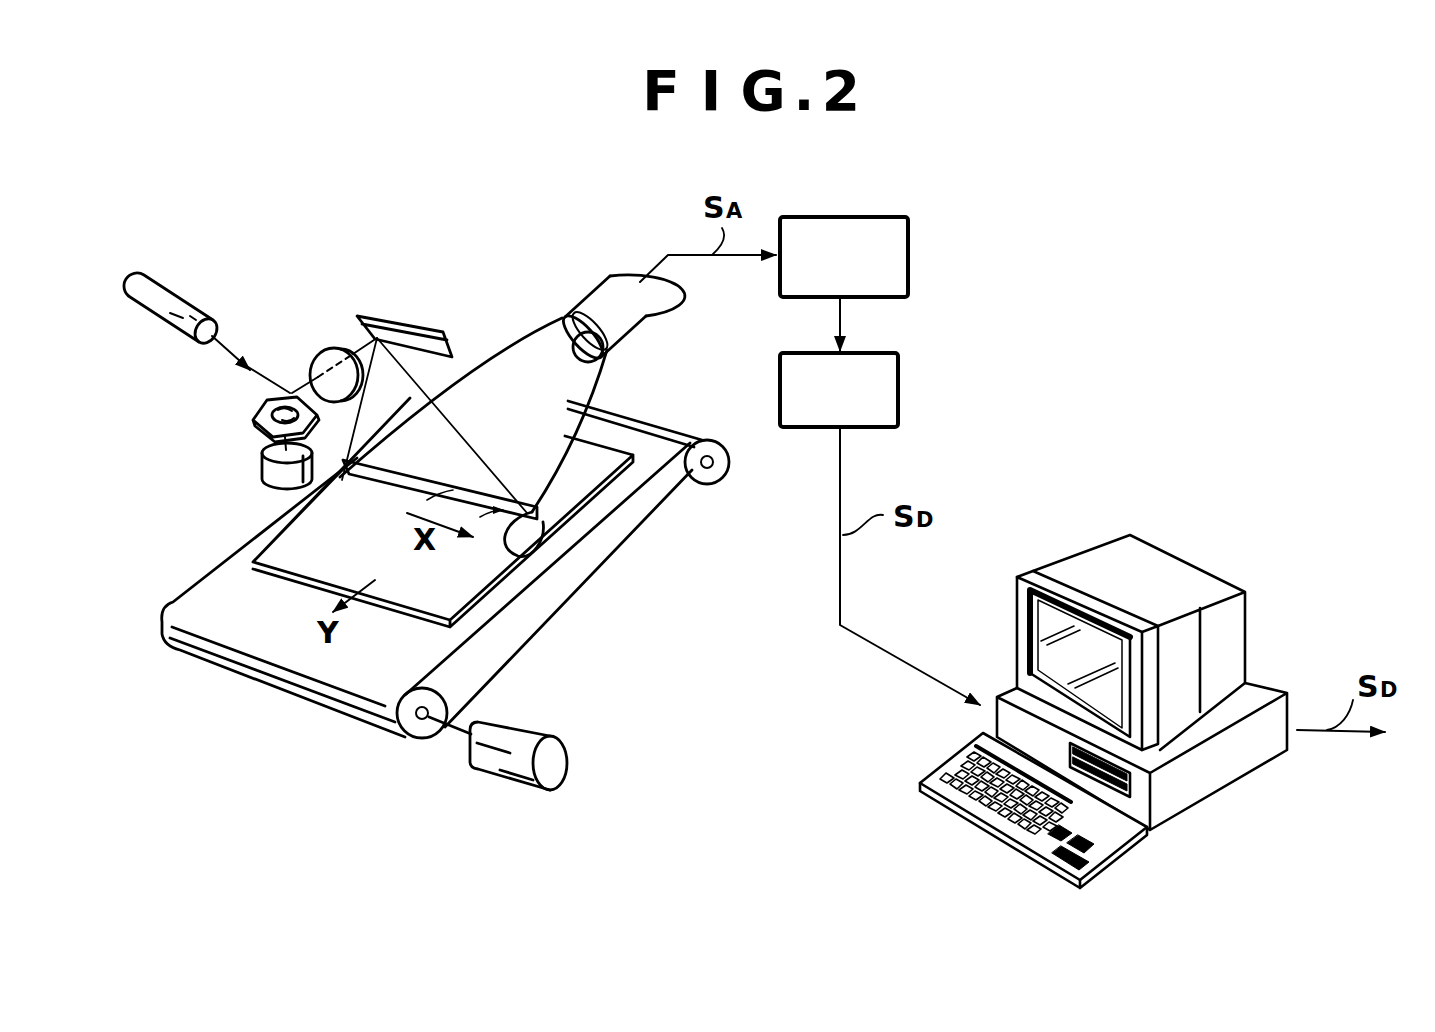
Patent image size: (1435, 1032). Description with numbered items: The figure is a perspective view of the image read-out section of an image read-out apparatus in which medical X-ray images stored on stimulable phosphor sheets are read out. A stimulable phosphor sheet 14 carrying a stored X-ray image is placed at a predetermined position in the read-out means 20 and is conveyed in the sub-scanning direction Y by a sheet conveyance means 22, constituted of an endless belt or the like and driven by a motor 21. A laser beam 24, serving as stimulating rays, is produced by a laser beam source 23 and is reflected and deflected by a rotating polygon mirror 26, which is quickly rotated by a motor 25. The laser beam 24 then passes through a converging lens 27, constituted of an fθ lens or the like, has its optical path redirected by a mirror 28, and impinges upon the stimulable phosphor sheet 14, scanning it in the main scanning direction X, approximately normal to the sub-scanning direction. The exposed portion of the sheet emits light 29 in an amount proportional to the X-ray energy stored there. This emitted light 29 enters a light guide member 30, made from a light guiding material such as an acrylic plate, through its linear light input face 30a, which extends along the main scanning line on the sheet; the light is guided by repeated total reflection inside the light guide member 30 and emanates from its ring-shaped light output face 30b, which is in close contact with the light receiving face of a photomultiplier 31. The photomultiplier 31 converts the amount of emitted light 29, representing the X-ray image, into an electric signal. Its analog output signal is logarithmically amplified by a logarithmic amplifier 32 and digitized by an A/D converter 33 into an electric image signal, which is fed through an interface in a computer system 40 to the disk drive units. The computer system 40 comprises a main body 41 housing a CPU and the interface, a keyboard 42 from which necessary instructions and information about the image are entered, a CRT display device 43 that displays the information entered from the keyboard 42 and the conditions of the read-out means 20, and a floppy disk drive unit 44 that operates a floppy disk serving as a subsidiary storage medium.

The stimulable phosphor sheet 14 is at (512, 600).
The read-out means 20 is at (400, 290).
The motor 21 is at (527, 733).
The sheet conveyance means 22 is at (447, 679).
The laser beam source 23 is at (174, 298).
The laser beam 24 is at (234, 348).
The motor 25 is at (266, 470).
The rotating polygon mirror 26 is at (258, 412).
The converging lens 27 is at (320, 352).
The mirror 28 is at (433, 328).
The emitted light 29 is at (392, 470).
The light guide member 30 is at (526, 433).
The linear light input face 30a is at (472, 582).
The ring-shaped light output face 30b is at (603, 366).
The photomultiplier 31 is at (600, 273).
The logarithmic amplifier 32 is at (887, 217).
The A/D converter 33 is at (900, 358).
The computer system 40 is at (1225, 563).
The main body 41 is at (1265, 690).
The keyboard 42 is at (933, 790).
The CRT display device 43 is at (1057, 583).
The floppy disk drive unit 44 is at (1137, 786).